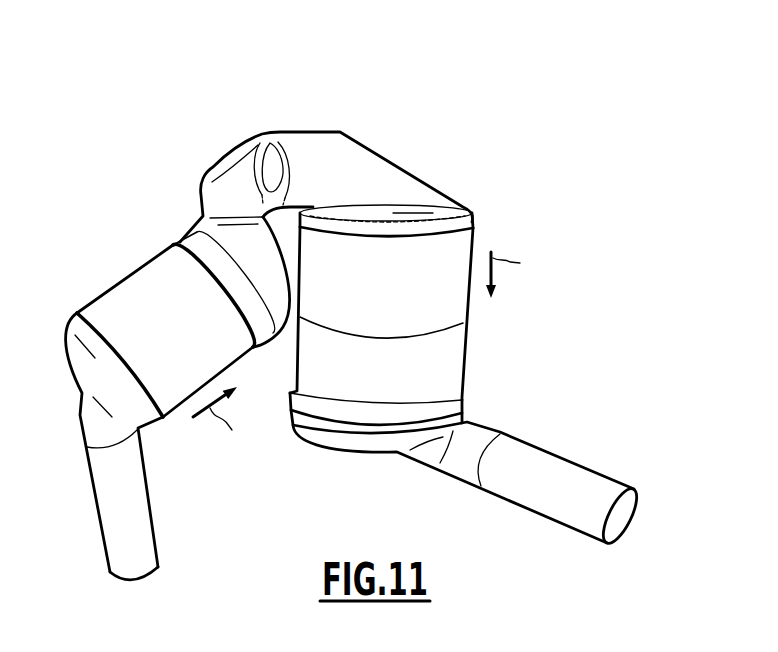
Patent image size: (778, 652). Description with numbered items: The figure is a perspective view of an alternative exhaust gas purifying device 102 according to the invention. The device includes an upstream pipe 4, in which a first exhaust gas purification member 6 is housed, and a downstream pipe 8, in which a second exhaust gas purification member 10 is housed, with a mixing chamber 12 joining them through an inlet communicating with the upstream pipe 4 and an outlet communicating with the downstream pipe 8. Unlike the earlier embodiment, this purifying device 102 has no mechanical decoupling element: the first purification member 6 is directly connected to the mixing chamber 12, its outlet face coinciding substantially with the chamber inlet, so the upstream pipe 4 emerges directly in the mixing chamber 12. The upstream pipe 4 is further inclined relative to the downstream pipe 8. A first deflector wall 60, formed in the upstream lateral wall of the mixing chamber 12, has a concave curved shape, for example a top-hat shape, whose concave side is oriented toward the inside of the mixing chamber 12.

The alternative exhaust gas purifying device 102 is at (449, 84).
The upstream pipe 4 is at (105, 275).
The first exhaust gas purification member 6 is at (149, 245).
The mixing chamber 12 is at (294, 114).
The first deflector wall 60 is at (282, 244).
The downstream pipe 8 is at (484, 245).
The second exhaust gas purification member 10 is at (484, 319).